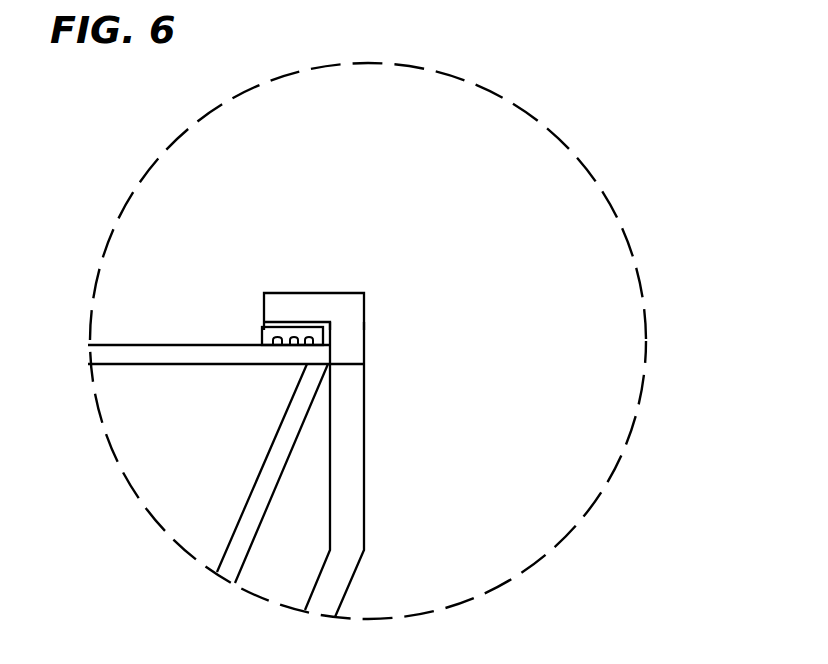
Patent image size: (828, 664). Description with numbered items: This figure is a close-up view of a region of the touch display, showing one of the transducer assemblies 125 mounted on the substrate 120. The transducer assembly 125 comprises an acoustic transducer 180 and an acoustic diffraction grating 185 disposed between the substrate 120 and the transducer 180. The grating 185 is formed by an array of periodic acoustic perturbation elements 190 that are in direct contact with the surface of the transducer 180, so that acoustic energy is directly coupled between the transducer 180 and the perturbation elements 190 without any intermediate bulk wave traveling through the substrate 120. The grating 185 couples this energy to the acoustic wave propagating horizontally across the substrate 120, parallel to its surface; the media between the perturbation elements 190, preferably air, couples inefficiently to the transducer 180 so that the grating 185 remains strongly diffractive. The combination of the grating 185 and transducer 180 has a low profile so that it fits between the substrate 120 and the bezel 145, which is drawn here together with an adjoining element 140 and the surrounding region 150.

The substrate 120 is at (167, 356).
The transducer assembly 125 is at (284, 327).
The support arm 140 is at (348, 458).
The bezel 145 is at (318, 293).
The enclosure region 150 is at (463, 323).
The acoustic transducer 180 is at (262, 328).
The acoustic diffraction grating 185 is at (261, 344).
The periodic acoustic perturbation elements 190 is at (293, 346).